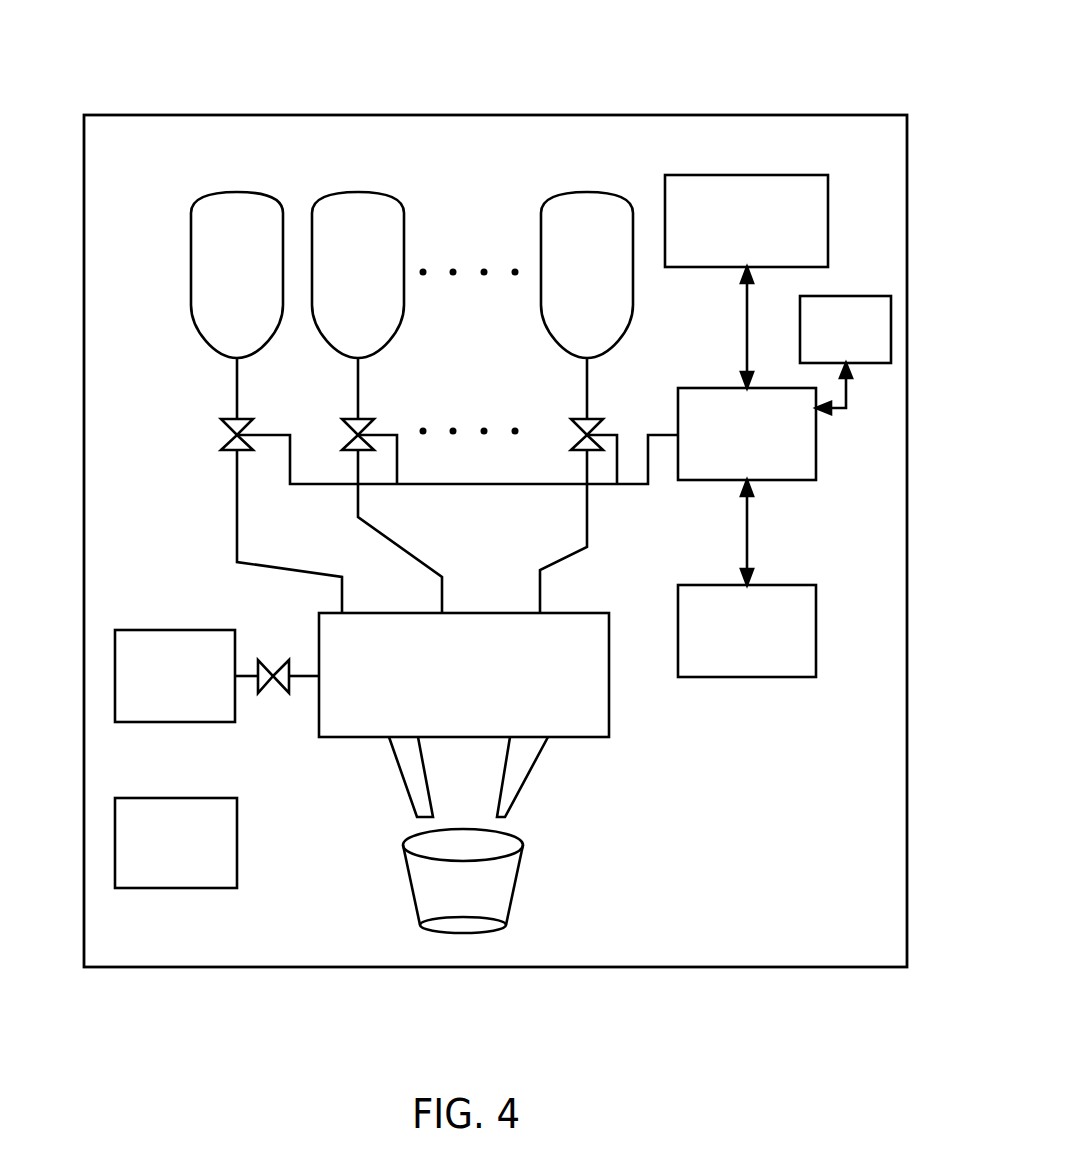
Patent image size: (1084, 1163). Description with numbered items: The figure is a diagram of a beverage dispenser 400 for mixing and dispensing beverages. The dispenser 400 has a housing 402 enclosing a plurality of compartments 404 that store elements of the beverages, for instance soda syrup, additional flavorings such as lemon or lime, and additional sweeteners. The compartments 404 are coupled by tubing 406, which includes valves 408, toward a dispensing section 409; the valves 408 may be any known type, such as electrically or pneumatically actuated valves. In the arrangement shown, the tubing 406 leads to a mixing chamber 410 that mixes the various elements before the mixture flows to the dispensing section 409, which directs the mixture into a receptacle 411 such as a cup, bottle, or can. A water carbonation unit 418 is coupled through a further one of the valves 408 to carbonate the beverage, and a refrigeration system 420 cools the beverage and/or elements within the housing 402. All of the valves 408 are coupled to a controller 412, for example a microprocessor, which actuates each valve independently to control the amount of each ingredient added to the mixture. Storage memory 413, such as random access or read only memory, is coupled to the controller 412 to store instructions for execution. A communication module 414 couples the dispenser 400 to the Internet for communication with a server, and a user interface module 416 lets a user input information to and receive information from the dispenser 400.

The beverage dispenser 400 is at (745, 85).
The housing 402 is at (708, 967).
The compartments 404 is at (237, 192).
The tubing 406 is at (237, 388).
The valves 408 is at (232, 416).
The dispensing section 409 is at (535, 762).
The mixing chamber 410 is at (609, 698).
The receptacle 411 is at (518, 887).
The controller 412 is at (816, 437).
The storage memory 413 is at (846, 296).
The communication module 414 is at (746, 175).
The user interface module 416 is at (745, 677).
The water carbonation unit 418 is at (175, 722).
The refrigeration system 420 is at (175, 888).